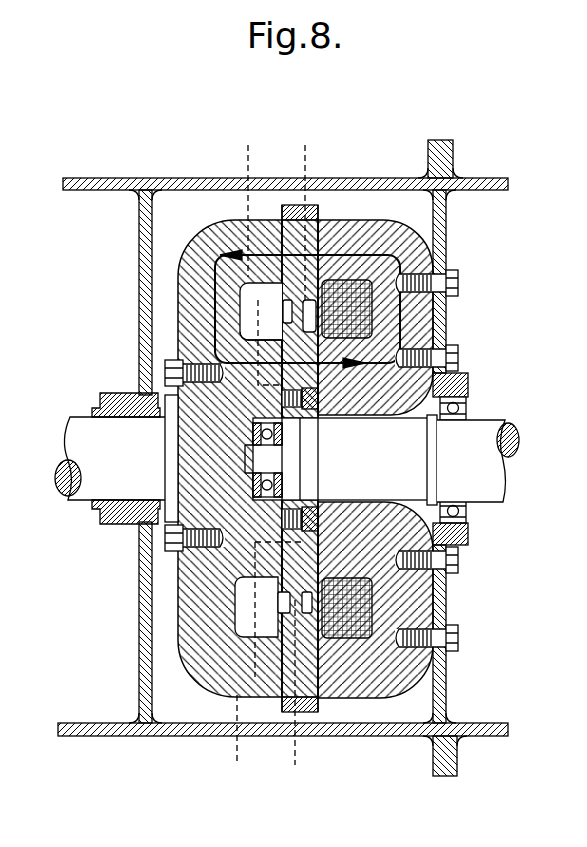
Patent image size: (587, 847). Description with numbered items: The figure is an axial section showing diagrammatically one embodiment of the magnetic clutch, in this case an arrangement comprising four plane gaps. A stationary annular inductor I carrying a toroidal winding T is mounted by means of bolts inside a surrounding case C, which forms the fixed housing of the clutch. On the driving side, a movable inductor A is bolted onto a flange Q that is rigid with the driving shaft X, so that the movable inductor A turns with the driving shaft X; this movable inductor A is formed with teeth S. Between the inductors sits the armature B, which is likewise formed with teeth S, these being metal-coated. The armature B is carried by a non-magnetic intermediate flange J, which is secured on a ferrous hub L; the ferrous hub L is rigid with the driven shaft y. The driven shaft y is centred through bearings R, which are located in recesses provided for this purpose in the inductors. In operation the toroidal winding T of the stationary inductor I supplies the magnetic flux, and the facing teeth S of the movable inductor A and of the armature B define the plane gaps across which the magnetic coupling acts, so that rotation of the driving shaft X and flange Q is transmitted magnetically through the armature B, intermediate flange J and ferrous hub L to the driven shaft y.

The surrounding case C is at (139, 222).
The movable inductor A is at (195, 288).
The armature B is at (290, 205).
The teeth S is at (273, 454).
The non-magnetic intermediate flange J is at (293, 292).
The ferrous hub L is at (283, 335).
The toroidal winding T is at (368, 315).
The stationary annular inductor I is at (420, 337).
The flange Q is at (180, 410).
The bearings R is at (272, 442).
The driving shaft X is at (110, 458).
The driven shaft y is at (454, 460).